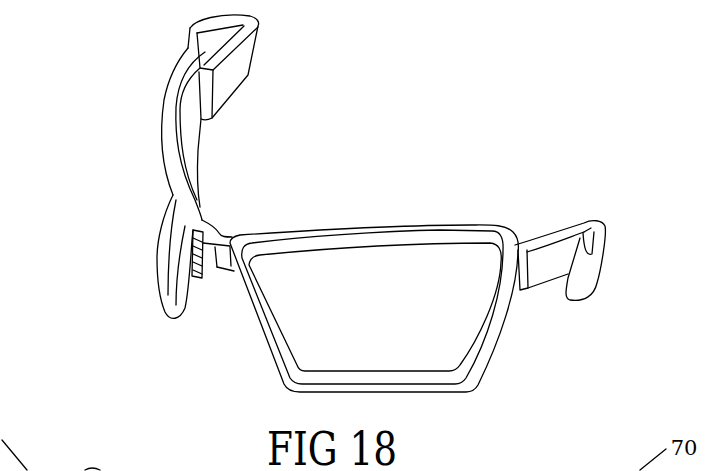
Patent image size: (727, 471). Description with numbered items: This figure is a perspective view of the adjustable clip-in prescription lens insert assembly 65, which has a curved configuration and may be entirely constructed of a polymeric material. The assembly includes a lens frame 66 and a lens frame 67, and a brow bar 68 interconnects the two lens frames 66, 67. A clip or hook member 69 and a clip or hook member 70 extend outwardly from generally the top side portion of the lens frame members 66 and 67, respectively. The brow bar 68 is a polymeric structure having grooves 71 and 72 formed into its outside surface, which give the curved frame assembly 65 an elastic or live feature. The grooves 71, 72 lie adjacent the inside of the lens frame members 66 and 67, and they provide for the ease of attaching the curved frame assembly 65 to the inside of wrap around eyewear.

The adjustable clip-in prescription lens insert assembly 65 is at (81, 133).
The lens frame 66 is at (166, 92).
The lens frame 67 is at (418, 236).
The brow bar 68 is at (233, 214).
The clip or hook member 69 is at (277, 35).
The clip or hook member 70 is at (609, 205).
The groove 71 is at (198, 282).
The groove 72 is at (232, 272).